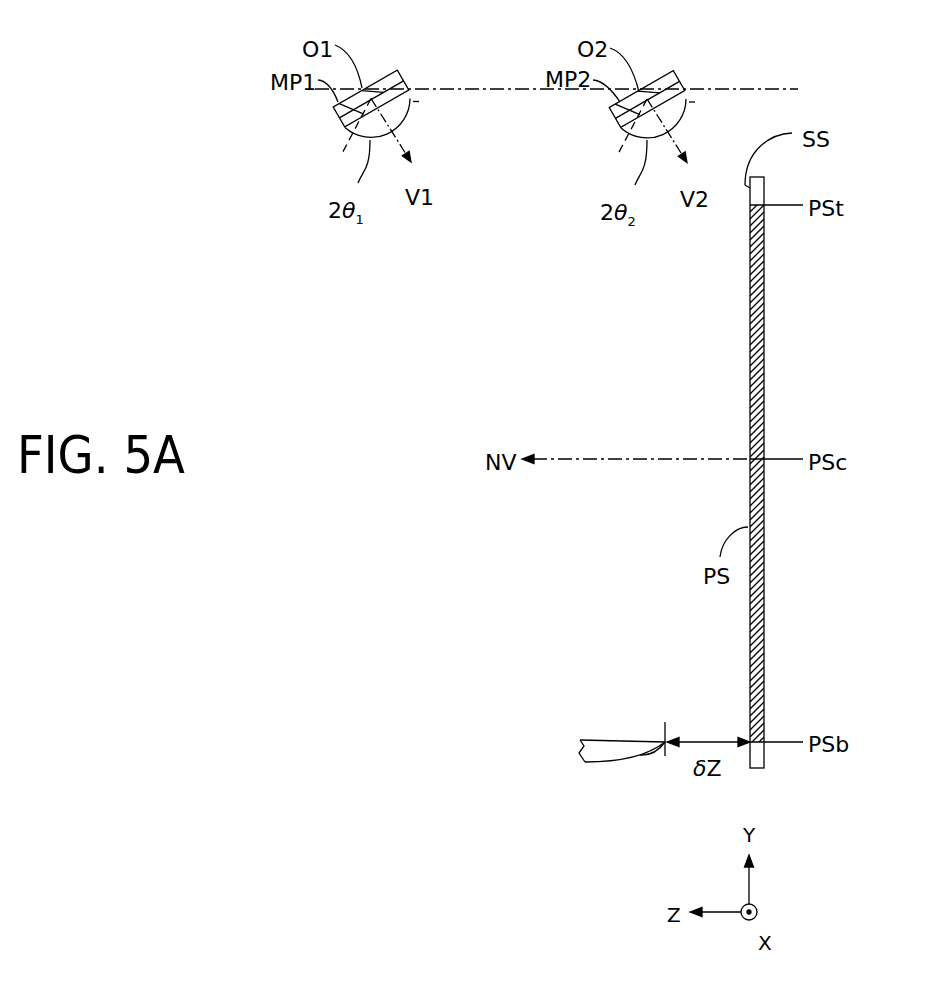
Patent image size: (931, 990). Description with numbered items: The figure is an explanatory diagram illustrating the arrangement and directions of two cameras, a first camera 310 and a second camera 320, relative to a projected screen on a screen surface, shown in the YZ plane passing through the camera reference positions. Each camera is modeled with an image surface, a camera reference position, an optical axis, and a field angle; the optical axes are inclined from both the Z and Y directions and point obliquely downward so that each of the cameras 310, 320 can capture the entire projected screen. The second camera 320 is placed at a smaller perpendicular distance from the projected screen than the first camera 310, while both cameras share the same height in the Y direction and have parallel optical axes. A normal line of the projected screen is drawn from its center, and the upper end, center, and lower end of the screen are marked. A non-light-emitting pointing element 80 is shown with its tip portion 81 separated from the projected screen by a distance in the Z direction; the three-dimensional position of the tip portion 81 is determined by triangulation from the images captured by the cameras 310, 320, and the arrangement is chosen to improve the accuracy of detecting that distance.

The first camera 310 is at (395, 70).
The second camera 320 is at (673, 72).
The non-light-emitting pointing element 80 is at (613, 748).
The tip portion 81 is at (666, 735).